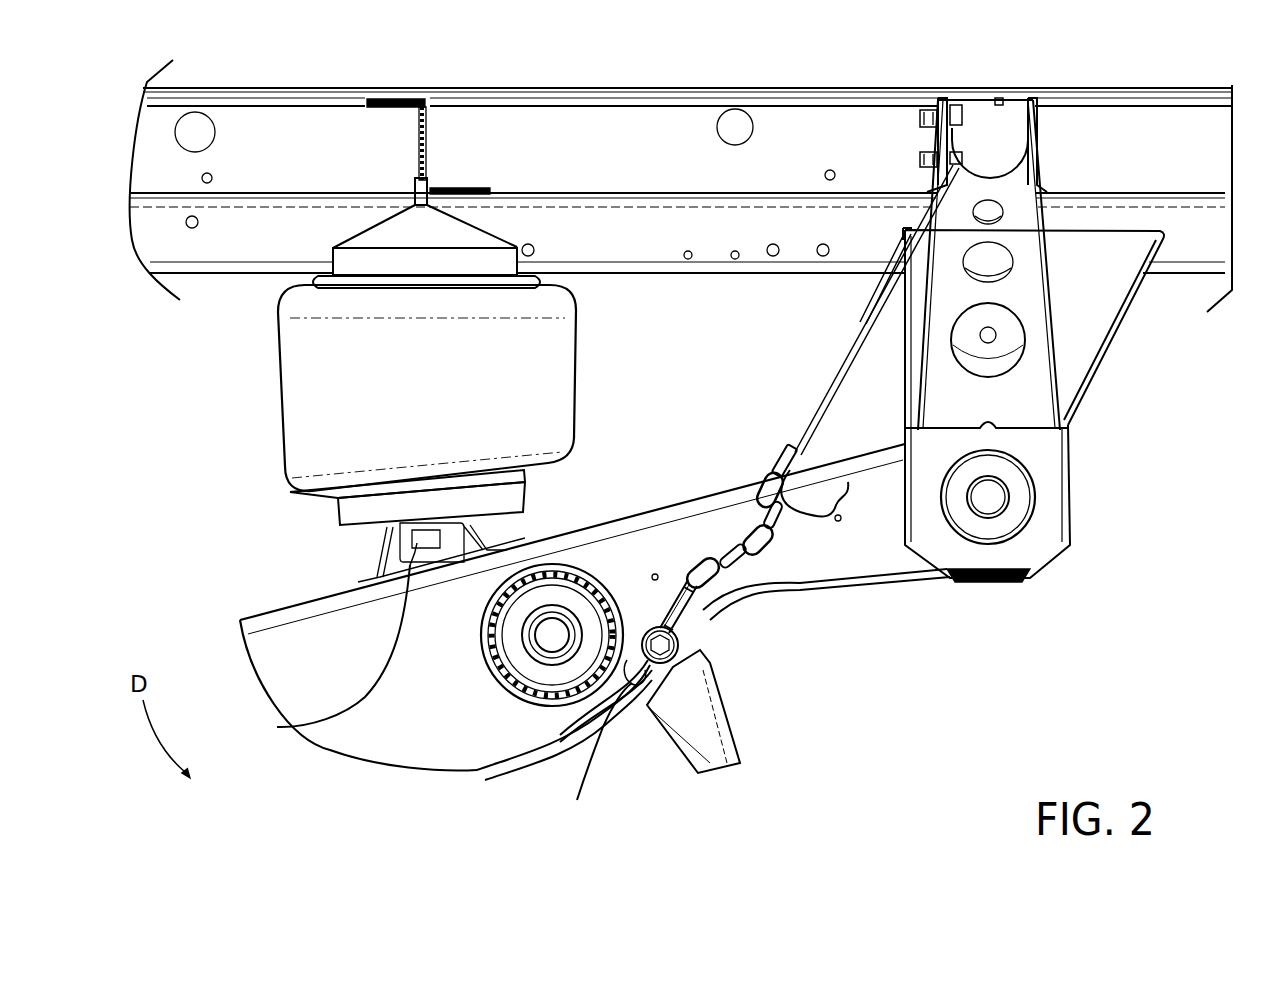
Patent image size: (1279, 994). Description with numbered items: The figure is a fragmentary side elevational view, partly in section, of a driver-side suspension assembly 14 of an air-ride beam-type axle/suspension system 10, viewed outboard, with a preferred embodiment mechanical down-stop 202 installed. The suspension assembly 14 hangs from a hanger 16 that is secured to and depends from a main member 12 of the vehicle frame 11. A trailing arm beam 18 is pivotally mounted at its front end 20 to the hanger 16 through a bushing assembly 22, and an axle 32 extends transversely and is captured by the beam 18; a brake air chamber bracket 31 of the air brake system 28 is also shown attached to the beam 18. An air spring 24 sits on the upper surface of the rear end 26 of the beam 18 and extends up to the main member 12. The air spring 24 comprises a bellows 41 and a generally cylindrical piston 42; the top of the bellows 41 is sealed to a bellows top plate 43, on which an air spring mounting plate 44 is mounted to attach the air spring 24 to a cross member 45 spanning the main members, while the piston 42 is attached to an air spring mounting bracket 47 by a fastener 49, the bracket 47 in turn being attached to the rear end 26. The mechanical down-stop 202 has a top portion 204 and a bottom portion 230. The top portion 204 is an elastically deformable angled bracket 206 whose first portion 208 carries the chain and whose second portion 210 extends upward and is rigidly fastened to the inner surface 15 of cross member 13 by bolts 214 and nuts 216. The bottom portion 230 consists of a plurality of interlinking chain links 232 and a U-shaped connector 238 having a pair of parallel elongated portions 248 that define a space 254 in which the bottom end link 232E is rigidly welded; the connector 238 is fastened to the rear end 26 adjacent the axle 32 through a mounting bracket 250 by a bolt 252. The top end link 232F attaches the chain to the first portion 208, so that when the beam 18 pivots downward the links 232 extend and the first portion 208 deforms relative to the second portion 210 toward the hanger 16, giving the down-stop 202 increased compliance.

The axle/suspension system 10 is at (960, 653).
The frame 11 is at (682, 80).
The main member 12 is at (510, 118).
The cross member 13 is at (1020, 180).
The suspension assembly 14 is at (1028, 343).
The inner surface 15 is at (970, 170).
The hanger 16 is at (1105, 279).
The trailing arm beam 18 is at (853, 588).
The front end 20 is at (880, 557).
The bushing assembly 22 is at (1018, 527).
The air spring 24 is at (419, 409).
The rear end 26 is at (565, 548).
The air brake system 28 is at (728, 741).
The brake air chamber bracket 31 is at (720, 772).
The axle 32 is at (502, 672).
The bellows 41 is at (300, 400).
The piston 42 is at (355, 510).
The bellows top plate 43 is at (300, 296).
The air spring mounting plate 44 is at (362, 253).
The cross member 45 is at (430, 128).
The air spring mounting bracket 47 is at (377, 547).
The fastener 49 is at (300, 724).
The mechanical down-stop 202 is at (803, 321).
The top portion 204 is at (850, 355).
The angled bracket 206 is at (830, 382).
The first portion 208 is at (856, 264).
The second portion 210 is at (946, 110).
The bolt 214 is at (960, 135).
The nut 216 is at (930, 112).
The bottom portion 230 is at (721, 501).
The chain links 232 is at (815, 505).
The bottom end link 232E is at (690, 560).
The top end link 232F is at (768, 482).
The U-shaped connector 238 is at (770, 568).
The elongated portions 248 is at (672, 640).
The mounting bracket 250 is at (600, 745).
The bolt 252 is at (577, 800).
The space 254 is at (708, 655).